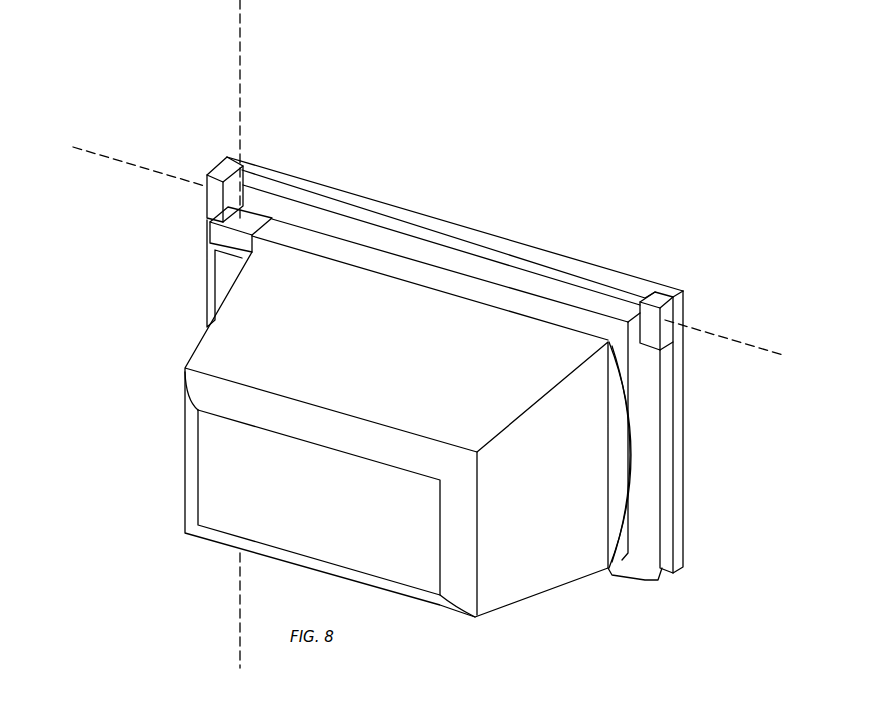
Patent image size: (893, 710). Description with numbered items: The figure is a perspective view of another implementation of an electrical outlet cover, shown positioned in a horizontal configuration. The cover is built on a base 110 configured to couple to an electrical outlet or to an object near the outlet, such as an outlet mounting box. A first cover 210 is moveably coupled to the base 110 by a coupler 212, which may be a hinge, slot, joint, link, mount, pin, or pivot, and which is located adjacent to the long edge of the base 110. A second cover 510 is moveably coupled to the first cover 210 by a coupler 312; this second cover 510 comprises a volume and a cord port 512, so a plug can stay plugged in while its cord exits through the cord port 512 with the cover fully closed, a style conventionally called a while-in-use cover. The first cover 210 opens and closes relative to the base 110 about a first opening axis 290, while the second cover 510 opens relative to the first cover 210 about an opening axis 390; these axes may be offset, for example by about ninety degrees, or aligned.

The base 110 is at (482, 237).
The first cover 210 is at (372, 218).
The coupler 212 is at (222, 175).
The first opening axis 290 is at (148, 172).
The coupler 312 is at (237, 228).
The opening axis 390 is at (242, 40).
The second cover 510 is at (245, 448).
The cord port 512 is at (630, 508).